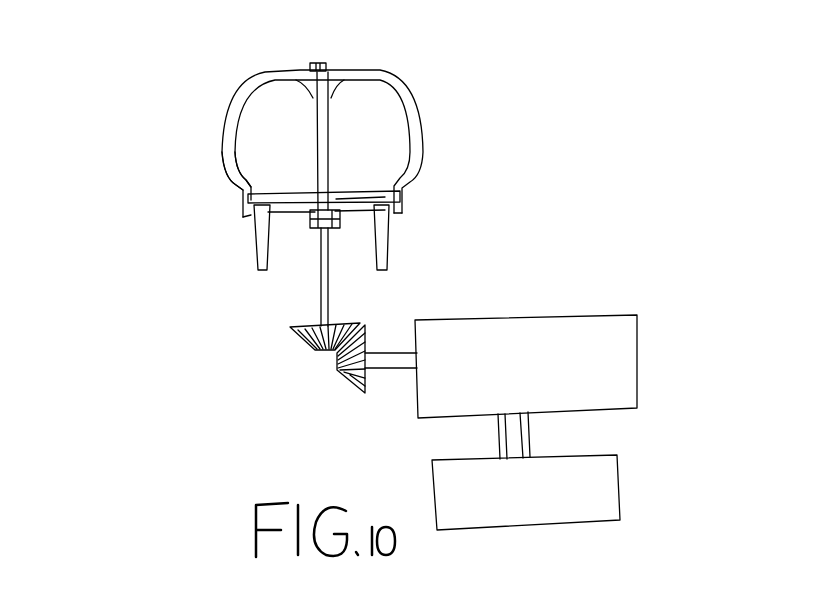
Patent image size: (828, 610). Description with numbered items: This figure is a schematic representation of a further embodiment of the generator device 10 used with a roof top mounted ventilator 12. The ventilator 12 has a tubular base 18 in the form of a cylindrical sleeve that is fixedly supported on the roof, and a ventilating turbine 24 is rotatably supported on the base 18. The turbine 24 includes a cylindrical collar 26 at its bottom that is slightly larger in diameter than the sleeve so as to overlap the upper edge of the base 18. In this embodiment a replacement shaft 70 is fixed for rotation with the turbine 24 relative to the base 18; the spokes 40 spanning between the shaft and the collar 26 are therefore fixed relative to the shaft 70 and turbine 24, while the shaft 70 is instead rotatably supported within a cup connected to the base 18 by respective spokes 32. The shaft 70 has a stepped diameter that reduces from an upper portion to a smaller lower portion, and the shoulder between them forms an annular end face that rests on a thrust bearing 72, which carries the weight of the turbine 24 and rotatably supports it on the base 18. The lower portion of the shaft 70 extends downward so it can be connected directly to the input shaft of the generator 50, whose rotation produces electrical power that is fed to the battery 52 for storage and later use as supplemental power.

The generator device 10 is at (206, 382).
The roof top mounted ventilator 12 is at (95, 110).
The tubular base 18 is at (392, 245).
The ventilating turbine 24 is at (427, 125).
The cylindrical collar 26 is at (400, 203).
The spokes 32 is at (283, 220).
The spokes 40 is at (280, 192).
The generator 50 is at (555, 320).
The battery 52 is at (652, 465).
The replacement shaft 70 is at (328, 128).
The thrust bearing 72 is at (310, 232).